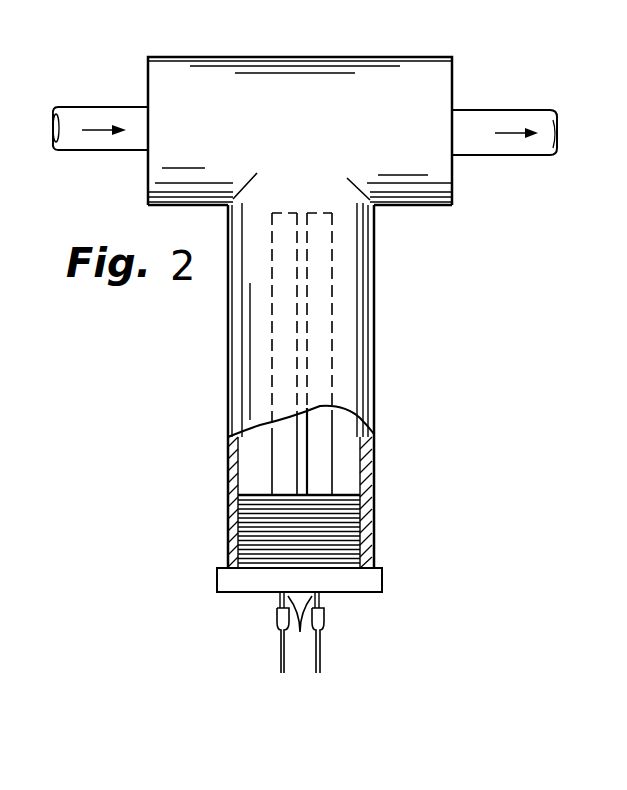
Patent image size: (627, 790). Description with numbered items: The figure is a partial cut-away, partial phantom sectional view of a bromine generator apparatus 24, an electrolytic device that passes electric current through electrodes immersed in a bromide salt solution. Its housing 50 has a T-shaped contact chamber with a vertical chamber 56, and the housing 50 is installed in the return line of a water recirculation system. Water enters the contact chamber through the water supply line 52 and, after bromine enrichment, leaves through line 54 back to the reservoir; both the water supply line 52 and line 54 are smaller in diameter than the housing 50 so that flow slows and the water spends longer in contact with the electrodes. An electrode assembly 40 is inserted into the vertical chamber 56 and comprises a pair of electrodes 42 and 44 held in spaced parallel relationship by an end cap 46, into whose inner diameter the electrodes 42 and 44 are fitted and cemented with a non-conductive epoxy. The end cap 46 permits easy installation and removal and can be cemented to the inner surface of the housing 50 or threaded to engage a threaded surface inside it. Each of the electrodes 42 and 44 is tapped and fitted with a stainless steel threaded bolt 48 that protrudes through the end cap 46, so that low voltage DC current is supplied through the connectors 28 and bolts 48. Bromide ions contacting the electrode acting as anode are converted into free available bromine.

The bromine generator apparatus 24 is at (420, 540).
The connectors 28 is at (287, 667).
The electrode assembly 40 is at (346, 428).
The electrode 42 is at (332, 457).
The electrode 44 is at (270, 458).
The end cap 46 is at (362, 516).
The threaded bolt 48 is at (299, 620).
The housing 50 is at (362, 68).
The water supply line 52 is at (127, 148).
The line 54 is at (500, 149).
The vertical chamber 56 is at (360, 358).